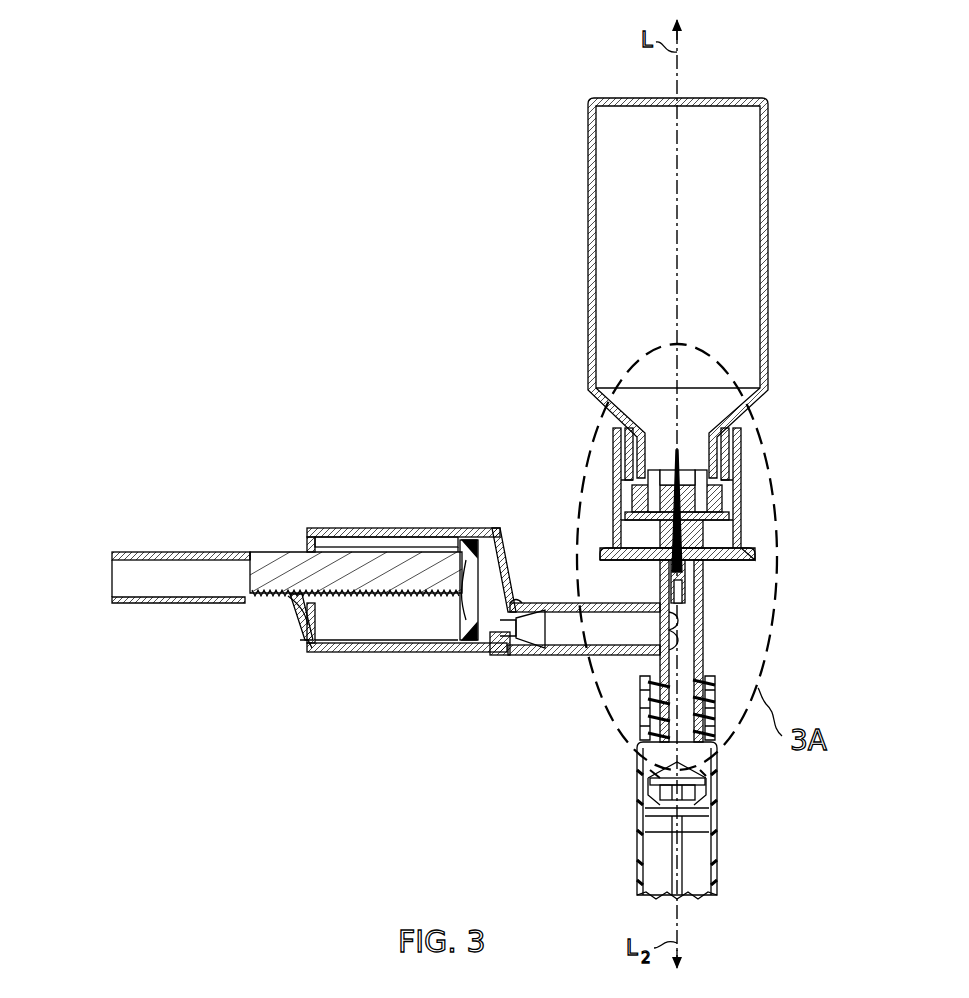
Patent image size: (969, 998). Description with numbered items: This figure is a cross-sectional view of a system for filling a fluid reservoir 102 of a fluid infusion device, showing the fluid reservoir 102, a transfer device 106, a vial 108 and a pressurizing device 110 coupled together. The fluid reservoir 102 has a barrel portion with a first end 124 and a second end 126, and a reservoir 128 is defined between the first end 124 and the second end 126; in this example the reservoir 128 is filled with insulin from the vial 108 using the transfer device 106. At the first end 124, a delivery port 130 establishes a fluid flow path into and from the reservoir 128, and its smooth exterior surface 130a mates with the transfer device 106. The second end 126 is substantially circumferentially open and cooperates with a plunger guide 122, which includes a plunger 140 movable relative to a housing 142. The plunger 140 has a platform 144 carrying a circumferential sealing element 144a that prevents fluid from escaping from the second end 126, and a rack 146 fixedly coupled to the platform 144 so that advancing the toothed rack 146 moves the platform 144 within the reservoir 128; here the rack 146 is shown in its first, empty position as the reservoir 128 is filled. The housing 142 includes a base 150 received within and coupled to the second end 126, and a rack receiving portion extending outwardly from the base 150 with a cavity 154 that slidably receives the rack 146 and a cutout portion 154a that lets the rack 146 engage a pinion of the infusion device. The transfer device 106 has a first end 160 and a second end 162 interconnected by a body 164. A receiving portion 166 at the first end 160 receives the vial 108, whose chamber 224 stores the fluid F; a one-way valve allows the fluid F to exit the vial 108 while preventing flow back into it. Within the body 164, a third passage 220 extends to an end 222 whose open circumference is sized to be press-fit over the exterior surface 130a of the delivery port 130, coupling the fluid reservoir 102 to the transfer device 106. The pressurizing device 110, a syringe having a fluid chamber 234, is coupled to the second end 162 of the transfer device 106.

The fluid reservoir 102 is at (248, 410).
The transfer device 106 is at (727, 470).
The vial 108 is at (708, 240).
The pressurizing device 110 is at (732, 835).
The plunger guide 122 is at (267, 551).
The first end 124 is at (508, 492).
The second end 126 is at (358, 614).
The reservoir 128 is at (405, 645).
The delivery port 130 is at (534, 608).
The exterior surface 130a is at (520, 660).
The plunger 140 is at (274, 618).
The housing 142 is at (267, 551).
The platform 144 is at (461, 595).
The sealing element 144a is at (464, 646).
The rack 146 is at (310, 596).
The base 150 is at (306, 646).
The cavity 154 is at (112, 580).
The cutout portion 154a is at (262, 598).
The first end 160 is at (777, 455).
The second end 162 is at (771, 681).
The body 164 is at (802, 600).
The receiving portion 166 is at (770, 418).
The third passage 220 is at (586, 608).
The end 222 is at (516, 598).
The chamber 224 is at (750, 260).
The fluid chamber 234 is at (726, 768).
The fluid F is at (716, 190).